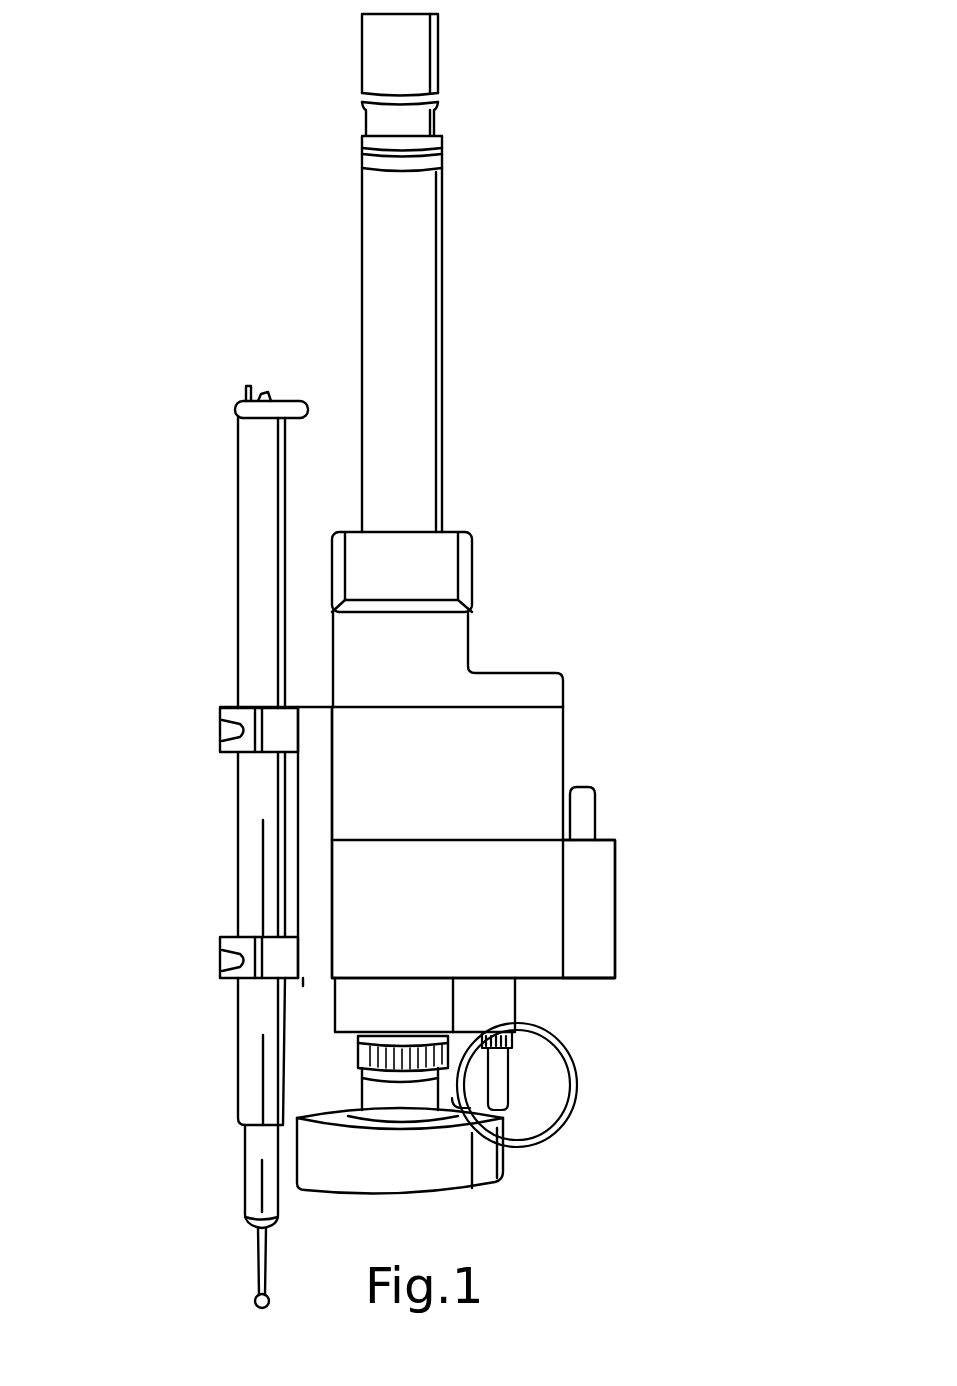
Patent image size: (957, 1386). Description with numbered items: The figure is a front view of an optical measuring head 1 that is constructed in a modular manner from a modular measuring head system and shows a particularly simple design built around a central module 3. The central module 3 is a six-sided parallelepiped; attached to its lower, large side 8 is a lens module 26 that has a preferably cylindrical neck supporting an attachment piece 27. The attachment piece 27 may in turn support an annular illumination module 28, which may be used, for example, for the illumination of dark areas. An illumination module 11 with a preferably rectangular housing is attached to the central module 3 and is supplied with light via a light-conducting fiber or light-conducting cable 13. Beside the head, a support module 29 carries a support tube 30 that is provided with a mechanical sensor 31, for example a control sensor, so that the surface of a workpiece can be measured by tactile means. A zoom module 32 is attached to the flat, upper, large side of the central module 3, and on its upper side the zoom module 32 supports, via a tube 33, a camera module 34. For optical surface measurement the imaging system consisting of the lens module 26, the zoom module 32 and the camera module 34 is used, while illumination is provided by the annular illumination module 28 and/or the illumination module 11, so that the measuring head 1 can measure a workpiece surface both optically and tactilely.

The optical measuring head 1 is at (672, 391).
The central module 3 is at (478, 918).
The lower large side 8 is at (543, 980).
The illumination module 11 is at (650, 890).
The light-conducting cable 13 is at (580, 806).
The lens module 26 is at (334, 1069).
The attachment piece 27 is at (428, 1025).
The annular illumination module 28 is at (478, 1165).
The support module 29 is at (316, 873).
The support tube 30 is at (257, 1015).
The mechanical sensor 31 is at (218, 1182).
The zoom module 32 is at (533, 745).
The tube 33 is at (417, 357).
The camera module 34 is at (470, 60).